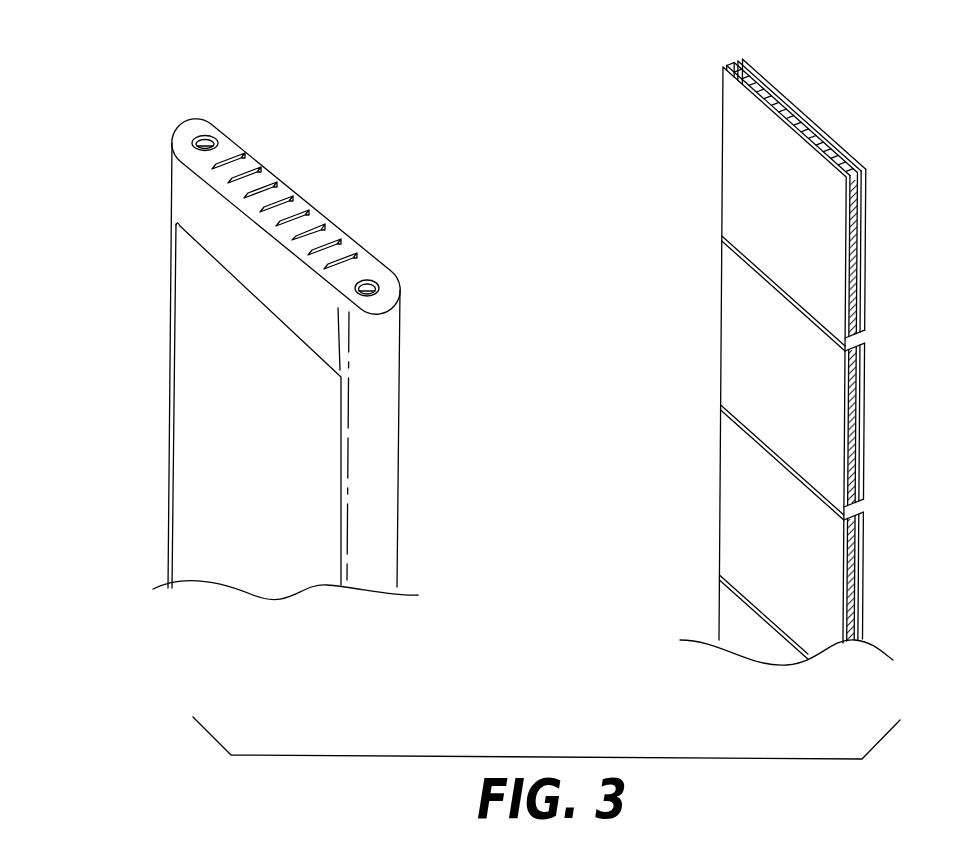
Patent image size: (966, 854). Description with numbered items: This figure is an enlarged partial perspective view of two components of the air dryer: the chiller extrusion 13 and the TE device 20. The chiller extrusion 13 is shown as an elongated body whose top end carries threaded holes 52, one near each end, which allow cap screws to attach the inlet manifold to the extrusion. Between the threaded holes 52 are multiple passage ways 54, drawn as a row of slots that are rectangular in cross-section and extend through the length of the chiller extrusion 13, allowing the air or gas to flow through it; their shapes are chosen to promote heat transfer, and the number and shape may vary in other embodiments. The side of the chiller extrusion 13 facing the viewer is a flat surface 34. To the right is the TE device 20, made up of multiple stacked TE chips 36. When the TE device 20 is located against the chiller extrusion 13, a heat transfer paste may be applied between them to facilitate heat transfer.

The chiller extrusion 13 is at (376, 229).
The threaded holes 52 is at (206, 140).
The passage ways 54 is at (246, 158).
The flat surface 34 is at (200, 402).
The TE device 20 is at (850, 136).
The TE chips 36 is at (876, 557).